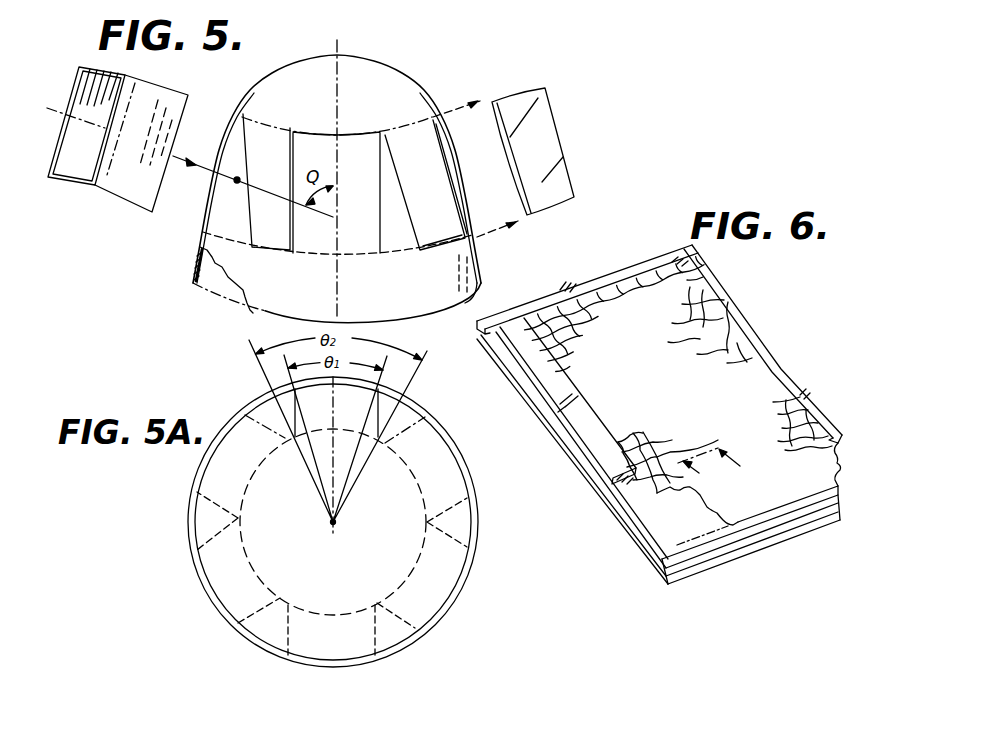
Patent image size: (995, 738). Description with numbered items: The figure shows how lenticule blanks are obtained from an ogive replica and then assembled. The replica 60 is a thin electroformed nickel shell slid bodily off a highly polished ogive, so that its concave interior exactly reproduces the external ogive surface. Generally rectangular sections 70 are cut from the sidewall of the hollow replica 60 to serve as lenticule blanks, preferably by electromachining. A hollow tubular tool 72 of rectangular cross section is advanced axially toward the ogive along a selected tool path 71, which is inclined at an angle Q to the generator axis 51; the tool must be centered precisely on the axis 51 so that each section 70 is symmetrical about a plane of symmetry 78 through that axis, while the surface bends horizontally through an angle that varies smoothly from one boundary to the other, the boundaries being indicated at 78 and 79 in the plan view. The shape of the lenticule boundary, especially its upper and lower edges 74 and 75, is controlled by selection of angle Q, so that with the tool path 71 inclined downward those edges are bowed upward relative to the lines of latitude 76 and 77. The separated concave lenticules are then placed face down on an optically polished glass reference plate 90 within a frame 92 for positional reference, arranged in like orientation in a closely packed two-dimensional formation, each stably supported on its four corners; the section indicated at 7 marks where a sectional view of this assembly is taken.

In FIG. 5, the generator axis 51 is at (338, 46).
In FIG. 5A, the generator axis 51 is at (334, 523).
In FIG. 5, the ogive replica 60 is at (420, 88).
In FIG. 5, the rectangular section 70 is at (287, 130).
In FIG. 6, the rectangular section 70 is at (737, 328).
In FIG. 5, the tool path 71 is at (237, 181).
In FIG. 5, the tubular tool 72 is at (112, 212).
In FIG. 5, the upper edge 74 is at (345, 130).
In FIG. 5, the lower edge 75 is at (348, 252).
In FIG. 5, the line of latitude 76 is at (348, 143).
In FIG. 5A, the line of latitude 76 is at (392, 447).
In FIG. 5, the line of latitude 77 is at (348, 257).
In FIG. 5A, the line of latitude 77 is at (467, 478).
In FIG. 5A, the plane of symmetry 78 is at (293, 403).
In FIG. 5A, the right tile edge 79 is at (378, 415).
In FIG. 6, the glass reference plate 90 is at (593, 477).
In FIG. 6, the frame 92 is at (585, 423).
In FIG. 6, the section line 7- 7 is at (713, 470).